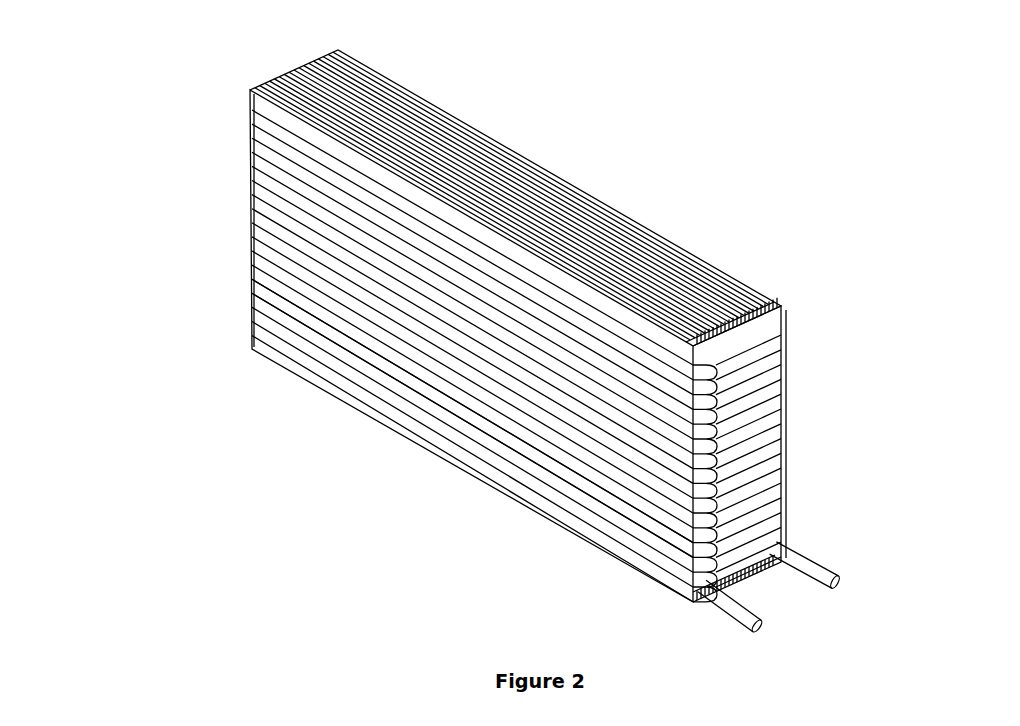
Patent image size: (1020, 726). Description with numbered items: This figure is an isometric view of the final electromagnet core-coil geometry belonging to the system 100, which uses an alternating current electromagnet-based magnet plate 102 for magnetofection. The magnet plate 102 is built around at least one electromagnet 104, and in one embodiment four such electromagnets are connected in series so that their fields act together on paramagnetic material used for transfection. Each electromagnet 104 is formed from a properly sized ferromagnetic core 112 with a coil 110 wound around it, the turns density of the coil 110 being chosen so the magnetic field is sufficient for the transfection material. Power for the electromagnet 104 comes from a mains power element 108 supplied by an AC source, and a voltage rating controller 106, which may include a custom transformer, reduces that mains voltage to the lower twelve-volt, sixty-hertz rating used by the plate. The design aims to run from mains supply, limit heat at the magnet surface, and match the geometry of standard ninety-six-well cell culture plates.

The system 100 is at (491, 324).
The alternating current electromagnet-based magnet plate 102 is at (515, 180).
The electromagnet 104 is at (160, 325).
The voltage rating controller 106 is at (858, 421).
The mains power element 108 is at (833, 617).
The coil 110 is at (340, 398).
The ferromagnetic core 112 is at (410, 138).